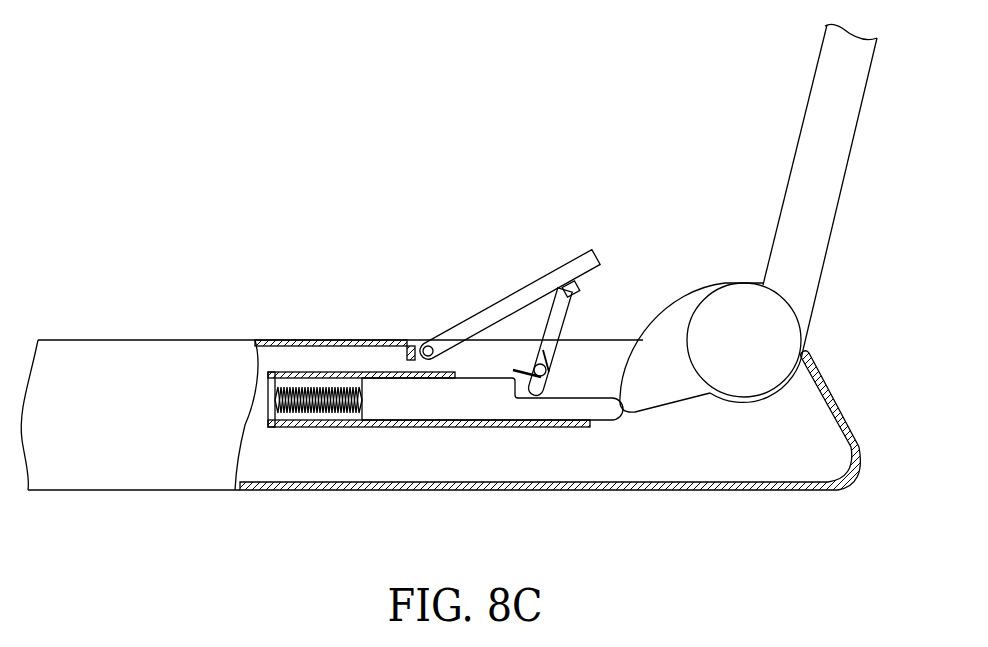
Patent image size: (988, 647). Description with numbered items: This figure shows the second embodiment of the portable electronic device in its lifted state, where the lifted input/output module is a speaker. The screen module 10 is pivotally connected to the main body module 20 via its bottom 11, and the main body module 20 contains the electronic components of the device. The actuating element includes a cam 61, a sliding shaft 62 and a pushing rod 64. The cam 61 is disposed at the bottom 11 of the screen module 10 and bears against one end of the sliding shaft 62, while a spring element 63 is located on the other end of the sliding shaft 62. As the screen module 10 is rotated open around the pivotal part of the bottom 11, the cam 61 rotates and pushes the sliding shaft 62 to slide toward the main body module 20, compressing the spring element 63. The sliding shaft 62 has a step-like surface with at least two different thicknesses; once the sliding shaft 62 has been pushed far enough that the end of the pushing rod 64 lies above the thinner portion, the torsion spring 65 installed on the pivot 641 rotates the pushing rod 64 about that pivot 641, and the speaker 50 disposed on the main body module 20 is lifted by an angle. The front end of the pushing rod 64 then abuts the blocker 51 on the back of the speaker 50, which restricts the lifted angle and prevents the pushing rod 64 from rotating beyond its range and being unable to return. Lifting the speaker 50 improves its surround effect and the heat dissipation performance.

The screen module 10 is at (837, 147).
The bottom 11 is at (800, 338).
The main body module 20 is at (95, 457).
The speaker 50 is at (515, 300).
The blocker 51 is at (580, 287).
The cam 61 is at (638, 403).
The sliding shaft 62 is at (465, 407).
The spring element 63 is at (292, 410).
The pushing rod 64 is at (532, 395).
The torsion spring 65 is at (557, 328).
The pivot 641 is at (546, 374).